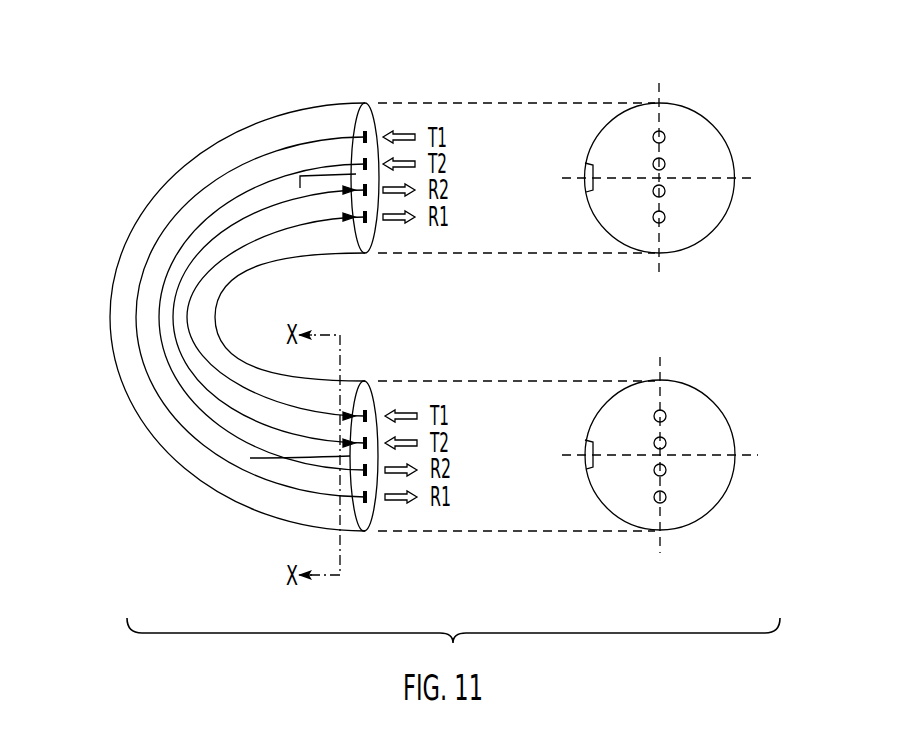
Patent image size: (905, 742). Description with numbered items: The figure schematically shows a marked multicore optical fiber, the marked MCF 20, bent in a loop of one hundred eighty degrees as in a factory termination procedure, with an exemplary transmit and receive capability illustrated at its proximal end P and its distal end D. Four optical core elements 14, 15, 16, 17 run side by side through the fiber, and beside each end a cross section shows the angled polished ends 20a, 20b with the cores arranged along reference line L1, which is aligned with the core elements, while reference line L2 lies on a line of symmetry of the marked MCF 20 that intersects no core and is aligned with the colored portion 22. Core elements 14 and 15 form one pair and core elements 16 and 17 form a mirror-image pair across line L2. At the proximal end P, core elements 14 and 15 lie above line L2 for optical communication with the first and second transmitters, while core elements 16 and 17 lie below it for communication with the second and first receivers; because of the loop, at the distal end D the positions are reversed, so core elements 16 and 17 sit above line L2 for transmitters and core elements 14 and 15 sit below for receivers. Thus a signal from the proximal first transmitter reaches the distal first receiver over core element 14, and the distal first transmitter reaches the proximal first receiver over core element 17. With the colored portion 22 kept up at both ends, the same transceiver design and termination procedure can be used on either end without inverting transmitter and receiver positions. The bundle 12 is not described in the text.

The optical fiber bundle (jacket) 12 is at (318, 102).
The core element 14 is at (262, 147).
The core element 15 is at (177, 238).
The core element 16 is at (253, 225).
The core element 17 is at (227, 281).
The marked MCF 20 is at (124, 232).
The angled polished end 20a is at (700, 193).
The angled polished end 20b is at (700, 488).
The colored portion 22 is at (300, 182).
The line L1 is at (654, 92).
The line L2 is at (746, 170).
The proximal end P is at (374, 104).
The distal end D is at (365, 397).